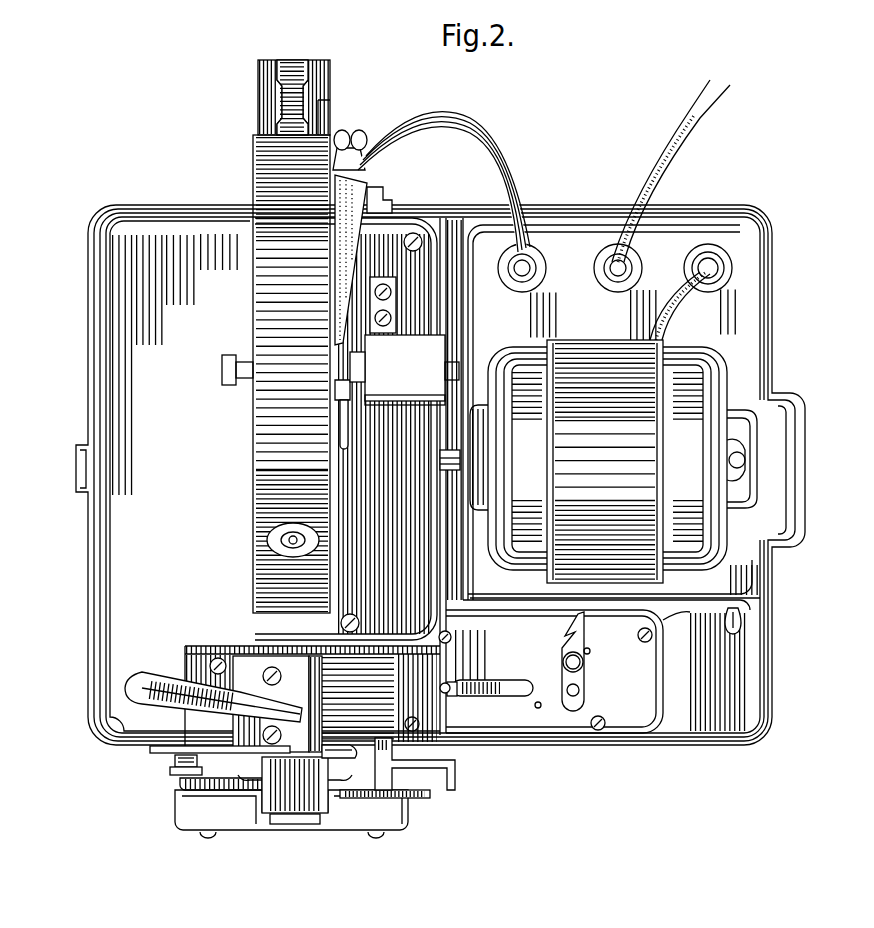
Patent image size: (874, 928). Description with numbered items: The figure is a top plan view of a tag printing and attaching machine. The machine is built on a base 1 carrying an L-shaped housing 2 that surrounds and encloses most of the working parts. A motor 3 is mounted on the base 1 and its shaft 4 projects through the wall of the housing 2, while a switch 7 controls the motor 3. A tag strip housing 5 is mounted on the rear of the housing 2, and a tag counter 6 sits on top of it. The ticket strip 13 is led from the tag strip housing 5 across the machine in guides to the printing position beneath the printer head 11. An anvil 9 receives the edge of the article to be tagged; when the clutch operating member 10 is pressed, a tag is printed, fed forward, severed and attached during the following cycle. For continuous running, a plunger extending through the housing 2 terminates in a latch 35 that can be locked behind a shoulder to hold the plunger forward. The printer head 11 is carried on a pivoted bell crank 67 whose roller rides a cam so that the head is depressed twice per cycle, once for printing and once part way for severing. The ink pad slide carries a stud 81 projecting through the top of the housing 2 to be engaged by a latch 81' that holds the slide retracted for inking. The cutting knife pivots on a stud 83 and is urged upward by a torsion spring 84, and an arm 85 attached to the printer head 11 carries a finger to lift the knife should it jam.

The base 1 is at (746, 348).
The housing 2 is at (112, 647).
The motor 3 is at (613, 461).
The shaft 4 is at (457, 463).
The tag strip housing 5 is at (263, 313).
The tag counter 6 is at (404, 341).
The switch 7 is at (742, 622).
The anvil 9 is at (305, 830).
The clutch operating member 10 is at (428, 800).
The printer head 11 is at (277, 704).
The ticket strip 13 is at (286, 650).
The latch 35 is at (456, 776).
The bell crank 67 is at (168, 675).
The stud 81 is at (490, 701).
The latch 81' is at (592, 661).
The stud 83 is at (230, 748).
The torsion spring 84 is at (174, 760).
The arm 85 is at (178, 788).